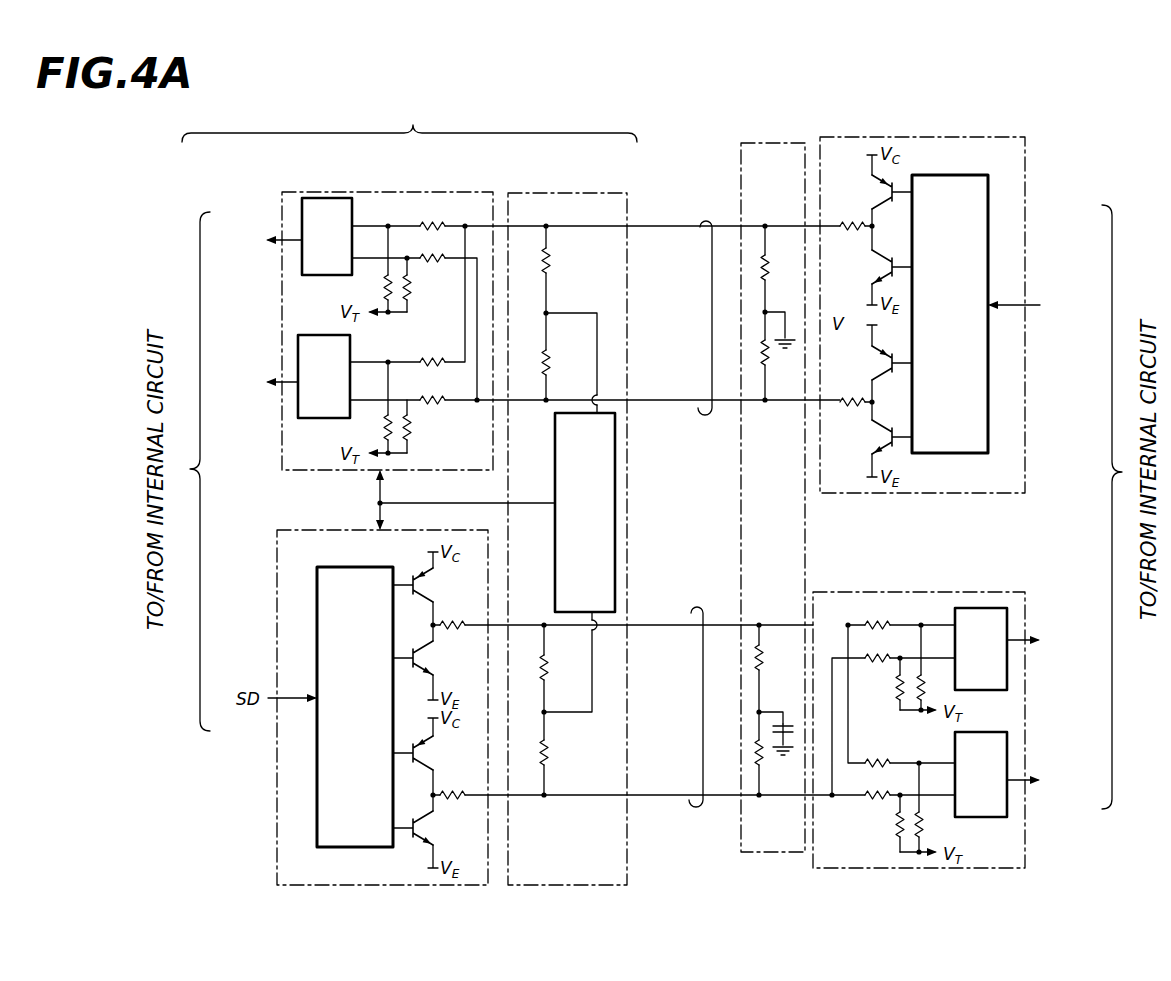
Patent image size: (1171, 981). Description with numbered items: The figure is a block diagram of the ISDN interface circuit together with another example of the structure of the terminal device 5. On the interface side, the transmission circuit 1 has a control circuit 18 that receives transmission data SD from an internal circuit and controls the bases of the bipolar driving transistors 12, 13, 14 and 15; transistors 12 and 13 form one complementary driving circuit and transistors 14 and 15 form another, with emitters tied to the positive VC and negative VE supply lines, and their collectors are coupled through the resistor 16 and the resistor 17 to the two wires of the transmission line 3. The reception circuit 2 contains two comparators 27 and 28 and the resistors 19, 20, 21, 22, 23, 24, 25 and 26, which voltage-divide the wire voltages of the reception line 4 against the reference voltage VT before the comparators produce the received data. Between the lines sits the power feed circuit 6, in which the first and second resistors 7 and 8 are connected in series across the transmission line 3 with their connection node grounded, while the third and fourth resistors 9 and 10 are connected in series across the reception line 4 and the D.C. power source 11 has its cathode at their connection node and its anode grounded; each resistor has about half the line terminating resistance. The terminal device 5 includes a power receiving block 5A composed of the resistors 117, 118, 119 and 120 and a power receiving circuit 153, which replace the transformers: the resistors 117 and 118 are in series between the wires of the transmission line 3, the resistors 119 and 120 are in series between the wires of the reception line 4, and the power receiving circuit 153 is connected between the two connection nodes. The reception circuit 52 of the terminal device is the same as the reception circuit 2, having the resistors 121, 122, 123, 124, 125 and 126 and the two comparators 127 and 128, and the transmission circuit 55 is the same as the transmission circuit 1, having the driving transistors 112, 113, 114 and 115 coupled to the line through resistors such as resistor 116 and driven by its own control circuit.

The transmission circuit 1 is at (858, 137).
The reception circuit 2 is at (888, 592).
The transmission line 3 is at (704, 208).
The reception line 4 is at (695, 602).
The terminal device 5 is at (409, 119).
The power receiving block 5A is at (530, 193).
The power feed circuit 6 is at (756, 143).
The first resistor 7 is at (780, 266).
The second resistor 8 is at (772, 356).
The third resistor 9 is at (765, 662).
The fourth resistor 10 is at (766, 757).
The D.C. power source 11 is at (791, 724).
The driving transistor 12 is at (874, 193).
The driving transistor 13 is at (876, 267).
The driving transistor 14 is at (876, 362).
The driving transistor 15 is at (876, 437).
The resistor 16 is at (854, 220).
The resistor 17 is at (854, 396).
The control circuit 18 is at (945, 175).
The resistor 19 is at (886, 606).
The resistor 20 is at (871, 670).
The resistor 21 is at (930, 684).
The resistor 22 is at (895, 688).
The resistor 23 is at (880, 752).
The resistor 24 is at (876, 808).
The resistor 25 is at (930, 822).
The resistor 26 is at (888, 836).
The comparator 27 is at (972, 608).
The comparator 28 is at (978, 732).
The reception circuit 52 is at (405, 192).
The transmission circuit 55 is at (346, 530).
The driving transistor 112 is at (428, 588).
The driving transistor 113 is at (428, 660).
The driving transistor 114 is at (428, 756).
The driving transistor 115 is at (428, 830).
The resistor 116 is at (454, 620).
The resistor 117 is at (550, 262).
The resistor 118 is at (550, 362).
The resistor 119 is at (437, 212).
The resistor 120 is at (437, 270).
The resistor 121 is at (371, 290).
The resistor 122 is at (412, 288).
The resistor 123 is at (430, 355).
The resistor 124 is at (432, 412).
The resistor 125 is at (370, 432).
The resistor 126 is at (414, 430).
The comparator 127 is at (308, 236).
The comparator 128 is at (330, 334).
The power receiving circuit 153 is at (555, 477).